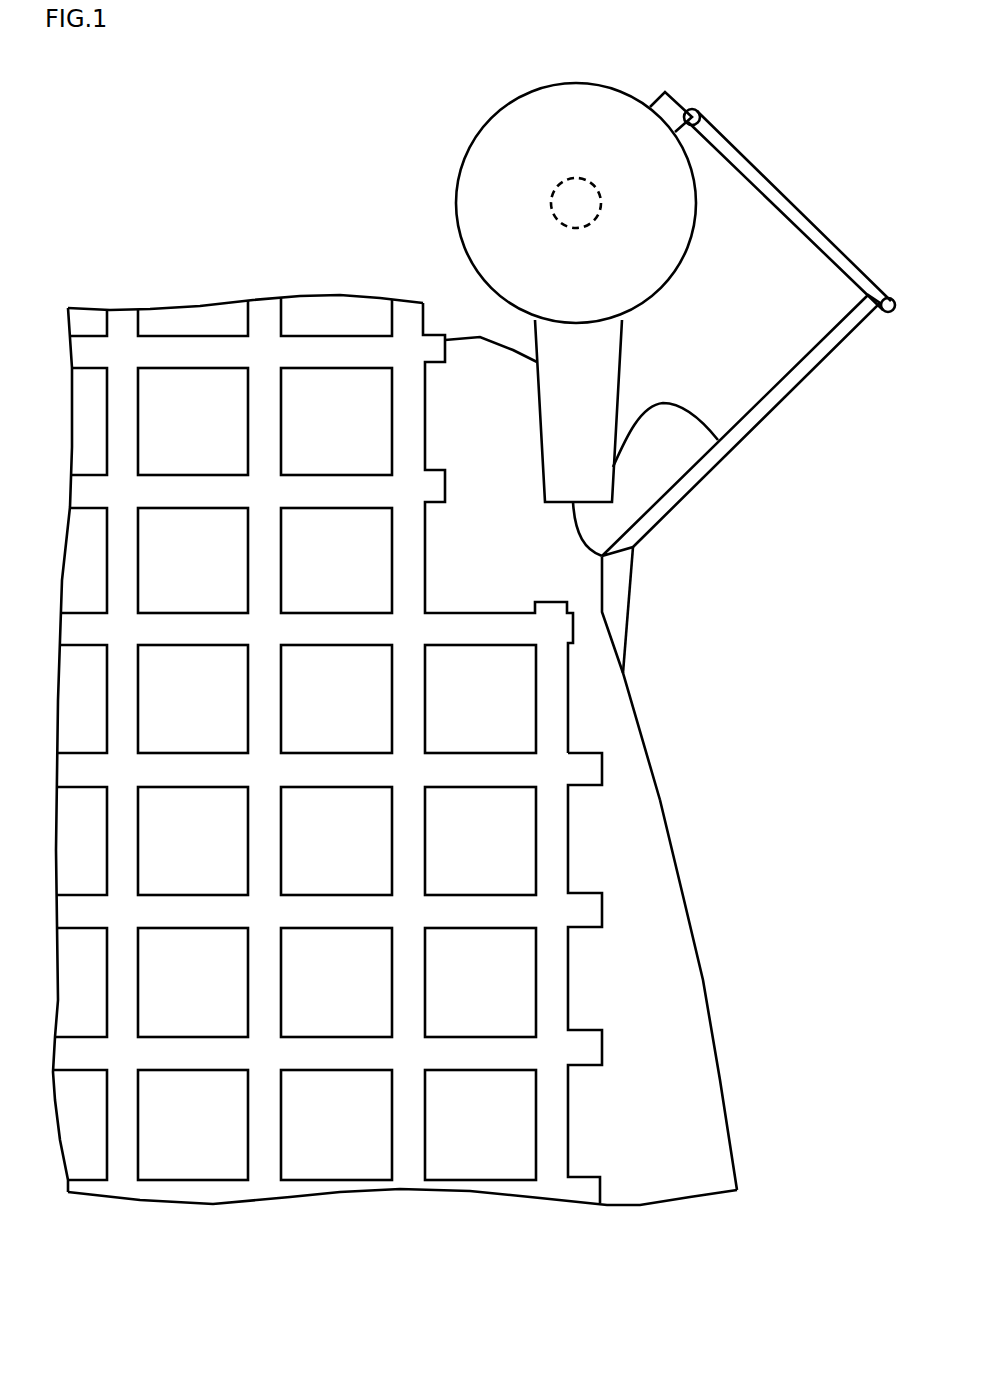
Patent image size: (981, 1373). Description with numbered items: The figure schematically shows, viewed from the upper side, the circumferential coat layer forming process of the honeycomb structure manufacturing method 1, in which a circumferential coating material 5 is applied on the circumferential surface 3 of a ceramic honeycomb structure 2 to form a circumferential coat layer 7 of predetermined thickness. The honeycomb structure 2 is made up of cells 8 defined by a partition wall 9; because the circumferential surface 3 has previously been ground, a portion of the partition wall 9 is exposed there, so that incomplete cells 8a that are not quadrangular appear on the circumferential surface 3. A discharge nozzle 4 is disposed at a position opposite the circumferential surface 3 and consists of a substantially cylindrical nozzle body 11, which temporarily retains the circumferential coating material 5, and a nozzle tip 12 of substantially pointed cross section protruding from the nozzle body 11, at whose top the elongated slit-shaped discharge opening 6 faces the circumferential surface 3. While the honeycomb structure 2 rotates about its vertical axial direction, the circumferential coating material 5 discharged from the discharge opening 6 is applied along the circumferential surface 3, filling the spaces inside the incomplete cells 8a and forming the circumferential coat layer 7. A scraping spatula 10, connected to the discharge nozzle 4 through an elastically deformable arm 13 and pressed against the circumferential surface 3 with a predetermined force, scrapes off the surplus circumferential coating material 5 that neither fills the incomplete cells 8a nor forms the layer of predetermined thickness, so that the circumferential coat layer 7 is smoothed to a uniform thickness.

The honeycomb structure manufacturing method 1 is at (170, 214).
The honeycomb structure 2 is at (395, 693).
The circumferential surface 3 is at (603, 762).
The discharge nozzle 4 is at (668, 262).
The circumferential coating material 5 is at (680, 438).
The discharge opening 6 is at (633, 550).
The circumferential coat layer 7 is at (670, 980).
The cells 8 is at (283, 853).
The incomplete cells 8a is at (570, 863).
The partition wall 9 is at (277, 978).
The scraping spatula 10 is at (617, 627).
The nozzle body 11 is at (682, 248).
The nozzle tip 12 is at (597, 333).
The arm 13 is at (805, 225).